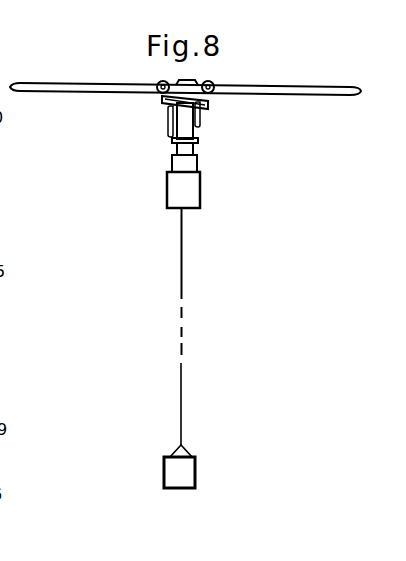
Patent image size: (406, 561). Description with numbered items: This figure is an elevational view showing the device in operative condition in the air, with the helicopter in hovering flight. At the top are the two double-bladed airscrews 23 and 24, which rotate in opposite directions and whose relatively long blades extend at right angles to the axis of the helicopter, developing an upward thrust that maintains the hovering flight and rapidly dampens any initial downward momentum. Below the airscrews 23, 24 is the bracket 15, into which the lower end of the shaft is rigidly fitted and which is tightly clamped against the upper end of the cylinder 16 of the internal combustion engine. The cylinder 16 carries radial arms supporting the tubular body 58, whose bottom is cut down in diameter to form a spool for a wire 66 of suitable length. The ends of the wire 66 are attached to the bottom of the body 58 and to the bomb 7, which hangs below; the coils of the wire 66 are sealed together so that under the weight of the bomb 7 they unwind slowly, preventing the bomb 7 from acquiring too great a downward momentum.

The double-bladed airscrew 24 is at (270, 87).
The double-bladed airscrew 23 is at (208, 106).
The bracket 15 is at (195, 130).
The cylinder 16 is at (193, 148).
The tubular body 58 is at (200, 184).
The wire 66 is at (181, 396).
The bomb 7 is at (196, 472).